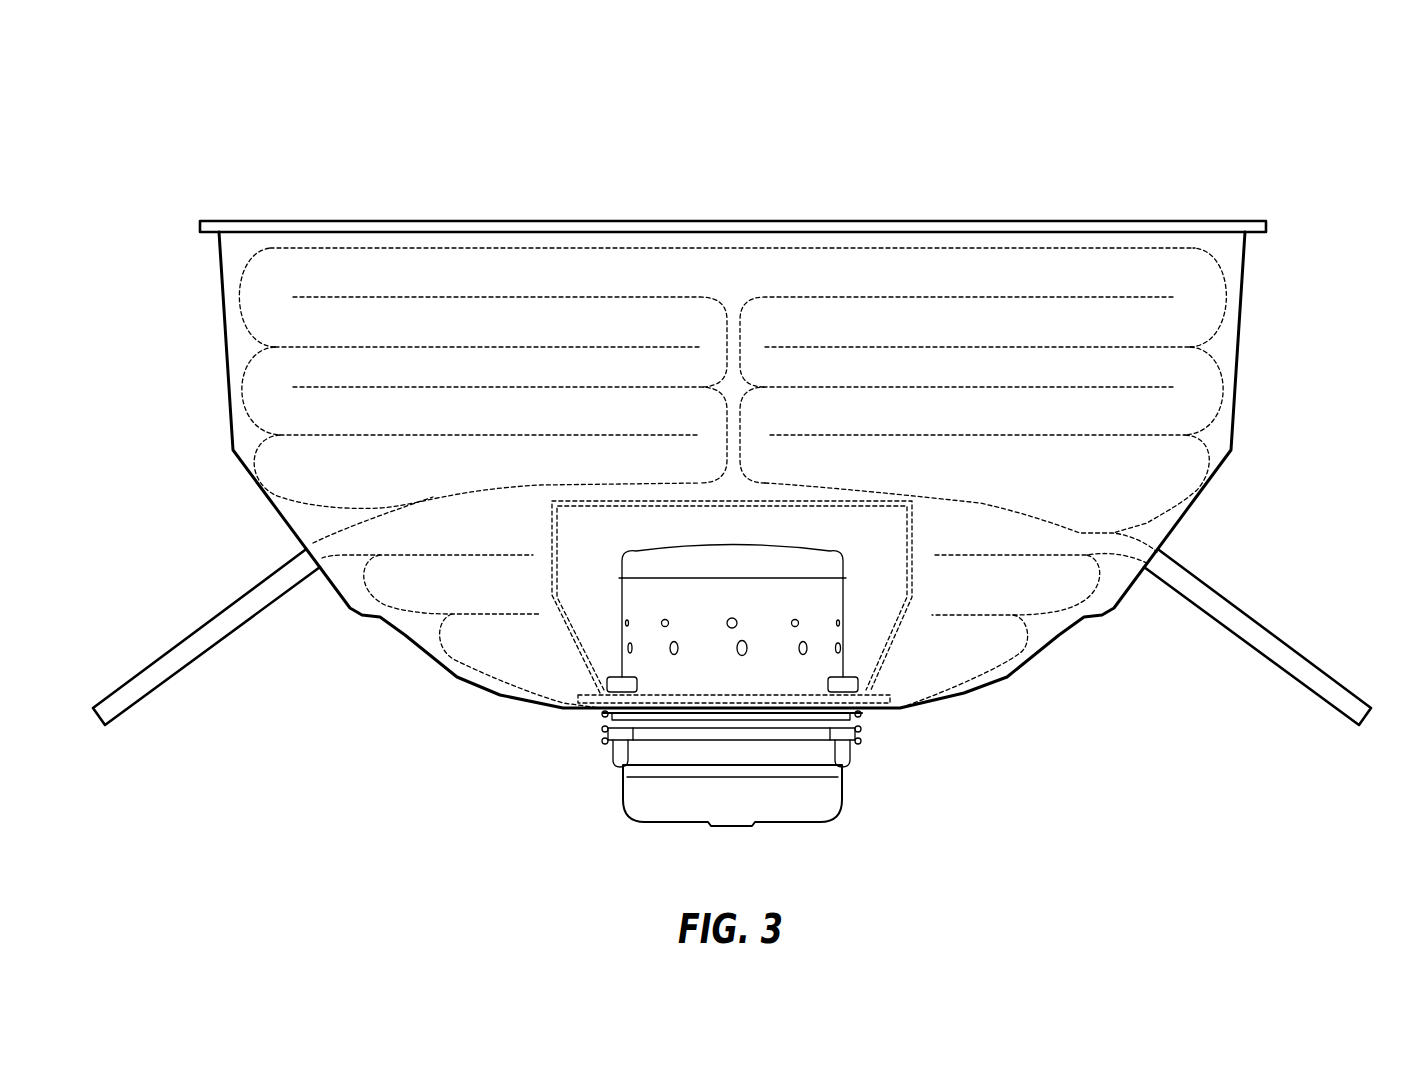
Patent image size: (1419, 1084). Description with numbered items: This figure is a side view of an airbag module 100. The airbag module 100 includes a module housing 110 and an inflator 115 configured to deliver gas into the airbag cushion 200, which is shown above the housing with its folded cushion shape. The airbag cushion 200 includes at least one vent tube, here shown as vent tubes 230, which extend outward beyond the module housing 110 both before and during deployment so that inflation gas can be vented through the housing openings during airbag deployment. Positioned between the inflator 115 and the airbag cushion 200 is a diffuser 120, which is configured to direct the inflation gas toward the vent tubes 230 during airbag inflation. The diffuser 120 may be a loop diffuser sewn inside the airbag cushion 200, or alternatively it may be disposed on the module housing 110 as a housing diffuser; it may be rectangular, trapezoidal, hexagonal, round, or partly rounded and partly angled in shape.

The airbag module 100 is at (1232, 133).
The module housing 110 is at (223, 333).
The inflator 115 is at (843, 633).
The diffuser 120 is at (572, 643).
The airbag cushion 200 is at (1138, 375).
The vent tubes 230 is at (190, 648).